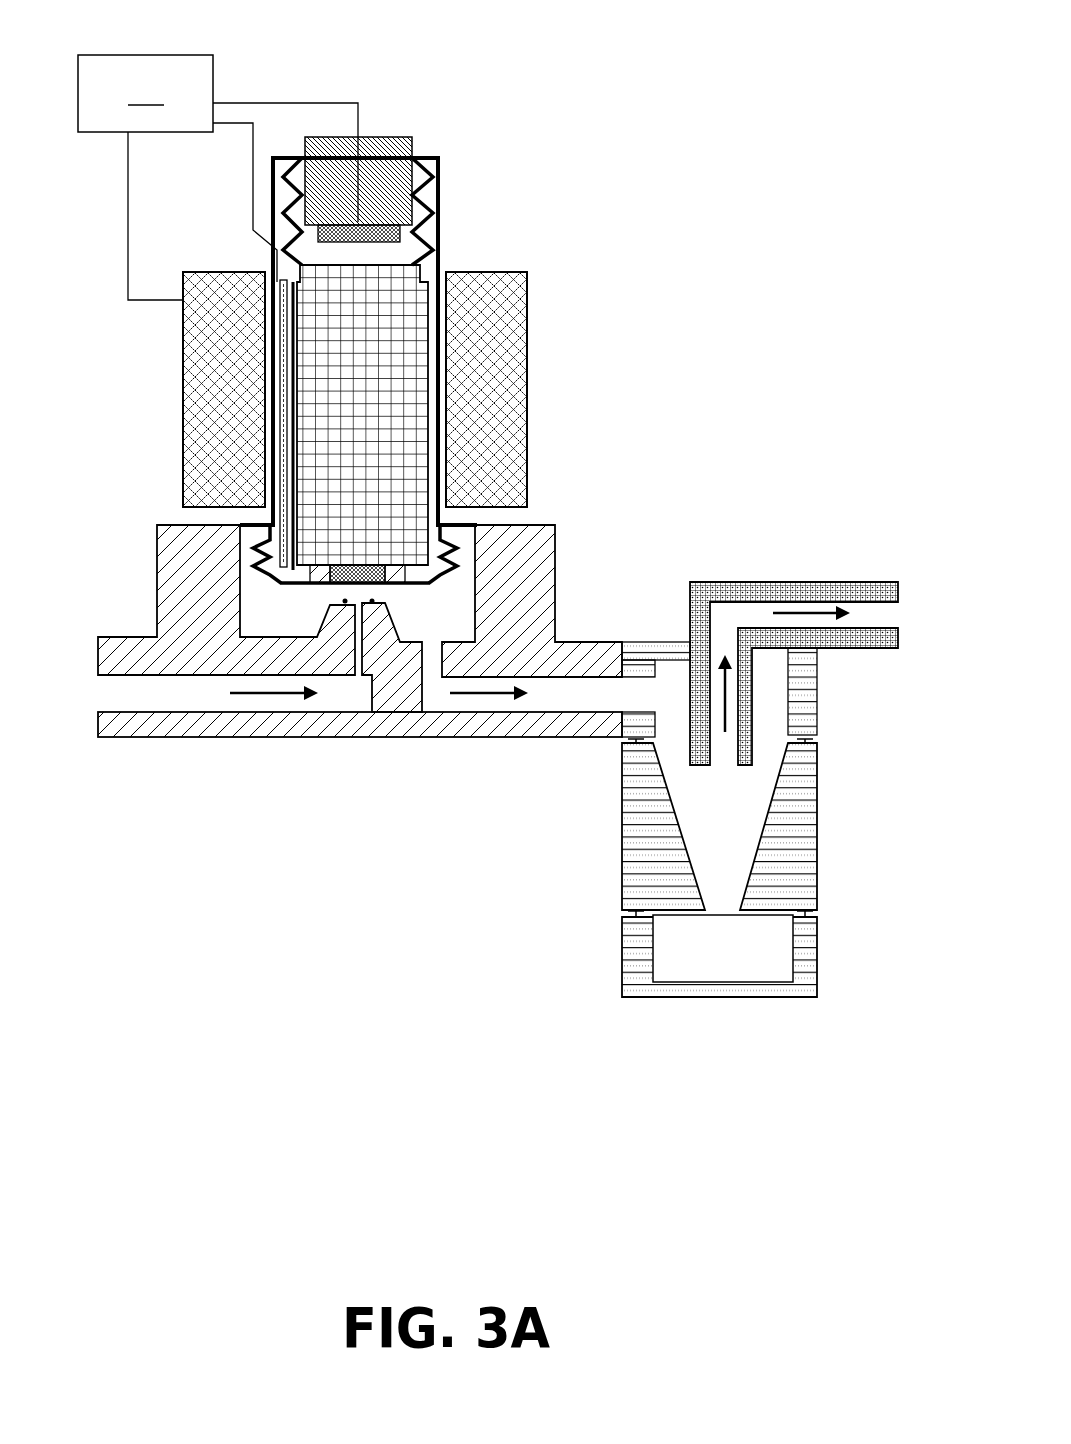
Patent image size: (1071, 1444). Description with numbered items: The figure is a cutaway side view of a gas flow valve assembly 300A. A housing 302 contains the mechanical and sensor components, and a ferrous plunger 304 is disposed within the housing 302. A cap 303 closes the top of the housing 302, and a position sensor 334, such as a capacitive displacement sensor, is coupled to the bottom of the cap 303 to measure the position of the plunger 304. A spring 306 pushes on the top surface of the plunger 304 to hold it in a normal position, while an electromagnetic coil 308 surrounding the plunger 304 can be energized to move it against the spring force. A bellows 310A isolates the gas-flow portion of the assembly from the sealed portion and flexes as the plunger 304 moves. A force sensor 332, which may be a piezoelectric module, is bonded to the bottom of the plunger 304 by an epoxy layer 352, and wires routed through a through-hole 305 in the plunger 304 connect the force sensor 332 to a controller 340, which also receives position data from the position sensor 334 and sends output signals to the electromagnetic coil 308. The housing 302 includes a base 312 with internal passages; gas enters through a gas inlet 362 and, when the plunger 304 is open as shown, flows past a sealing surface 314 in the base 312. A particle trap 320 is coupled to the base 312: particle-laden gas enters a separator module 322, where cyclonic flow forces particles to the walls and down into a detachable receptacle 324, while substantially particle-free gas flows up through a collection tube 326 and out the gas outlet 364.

The gas flow valve assembly 300A is at (818, 60).
The housing 302 is at (440, 190).
The cap 303 is at (413, 137).
The plunger 304 is at (432, 378).
The through-hole 305 is at (288, 272).
The spring 306 is at (433, 215).
The electromagnetic coil 308 is at (527, 310).
The bellows 310A is at (345, 565).
The base 312 is at (555, 550).
The sealing surface 314 is at (372, 600).
The particle trap 320 is at (490, 887).
The separator module 322 is at (622, 848).
The detachable receptacle 324 is at (622, 968).
The collection tube 326 is at (752, 707).
The force sensor 332 is at (345, 566).
The position sensor 334 is at (400, 235).
The controller 340 is at (218, 177).
The epoxy layer 352 is at (310, 577).
The gas inlet 362 is at (88, 682).
The gas outlet 364 is at (910, 592).